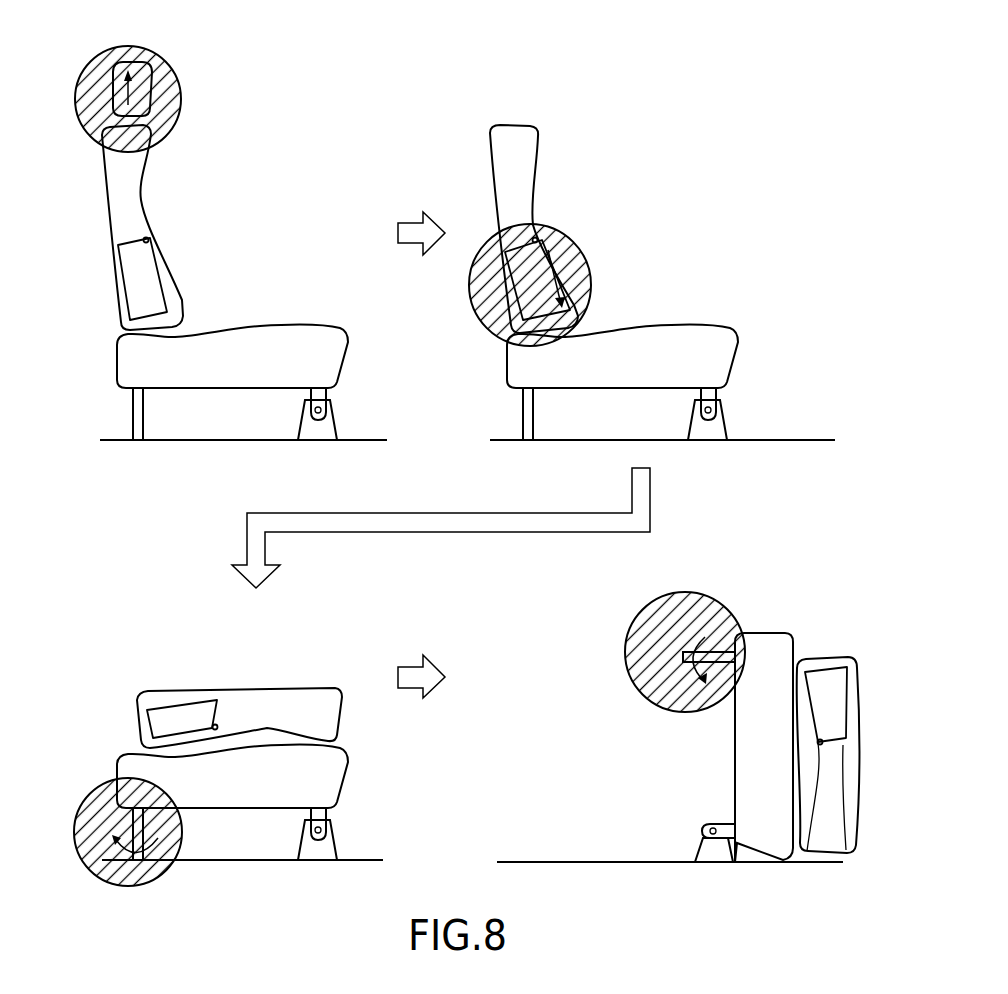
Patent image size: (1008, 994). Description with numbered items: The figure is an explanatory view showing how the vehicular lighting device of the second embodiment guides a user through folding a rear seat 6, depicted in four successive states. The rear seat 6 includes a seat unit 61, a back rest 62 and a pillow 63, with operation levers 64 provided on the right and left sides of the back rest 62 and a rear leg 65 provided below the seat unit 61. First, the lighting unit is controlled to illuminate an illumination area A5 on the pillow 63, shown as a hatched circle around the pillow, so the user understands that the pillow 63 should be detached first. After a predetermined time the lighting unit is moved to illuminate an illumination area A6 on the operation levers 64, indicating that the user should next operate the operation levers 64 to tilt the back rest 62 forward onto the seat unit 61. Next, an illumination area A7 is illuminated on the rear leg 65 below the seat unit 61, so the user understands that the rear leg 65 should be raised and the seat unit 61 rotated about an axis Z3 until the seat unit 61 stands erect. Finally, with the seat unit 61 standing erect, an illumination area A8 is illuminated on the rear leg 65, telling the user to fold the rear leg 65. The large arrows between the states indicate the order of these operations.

The rear seat 6 is at (266, 206).
The seat unit 61 is at (295, 325).
The back rest 62 is at (168, 259).
The pillow 63 is at (125, 51).
The operation levers 64 is at (148, 240).
The rear leg 65 is at (138, 417).
The axis Z3 is at (327, 408).
The illumination area A5 is at (168, 57).
The illumination area A6 is at (590, 266).
The illumination area A7 is at (88, 788).
The illumination area A8 is at (635, 620).